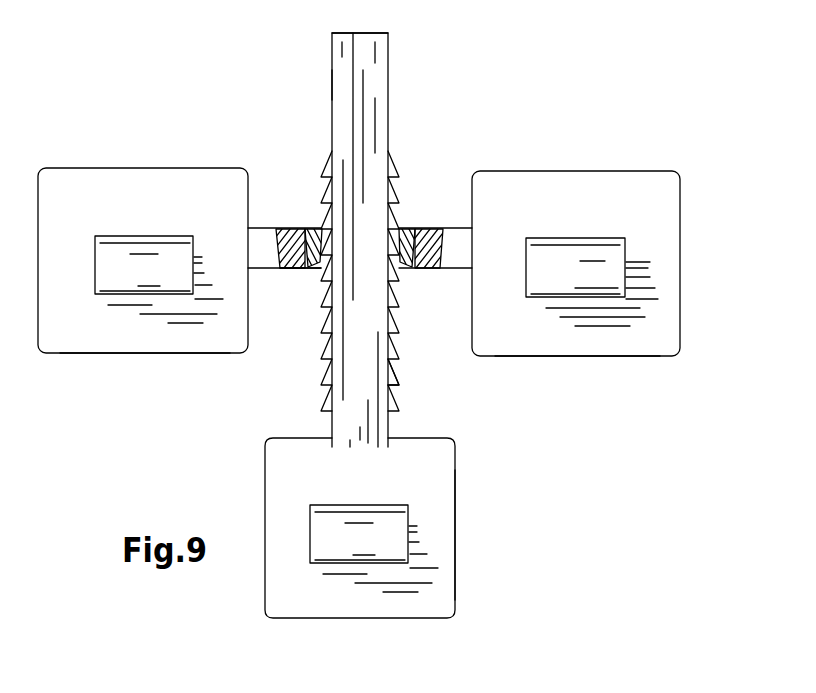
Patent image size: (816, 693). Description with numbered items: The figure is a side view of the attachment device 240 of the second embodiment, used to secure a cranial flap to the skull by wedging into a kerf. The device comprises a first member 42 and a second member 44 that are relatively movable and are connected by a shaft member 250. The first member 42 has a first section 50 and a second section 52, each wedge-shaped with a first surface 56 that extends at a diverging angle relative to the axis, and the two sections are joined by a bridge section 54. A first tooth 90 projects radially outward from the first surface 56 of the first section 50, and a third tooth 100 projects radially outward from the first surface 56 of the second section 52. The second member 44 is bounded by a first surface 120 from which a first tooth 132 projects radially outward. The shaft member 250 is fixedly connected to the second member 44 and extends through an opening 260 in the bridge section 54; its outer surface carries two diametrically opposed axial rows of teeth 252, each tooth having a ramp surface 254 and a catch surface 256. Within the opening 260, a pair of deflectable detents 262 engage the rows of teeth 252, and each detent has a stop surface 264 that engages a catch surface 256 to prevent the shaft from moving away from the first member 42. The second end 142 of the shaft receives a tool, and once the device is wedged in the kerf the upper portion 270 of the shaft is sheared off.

The first member 42 is at (614, 161).
The second member 44 is at (468, 541).
The first section 50 is at (642, 368).
The second section 52 is at (139, 363).
The bridge section 54 is at (452, 250).
The first surface 56 is at (125, 188).
The first tooth 90 is at (603, 272).
The third tooth 100 is at (170, 268).
The first surface 120 is at (433, 492).
The first tooth 132 is at (395, 545).
The second end 142 is at (375, 50).
The attachment device 240 is at (529, 88).
The shaft member 250 is at (402, 104).
The teeth 252 is at (308, 405).
The ramp surface 254 is at (395, 357).
The catch surface 256 is at (393, 367).
The opening 260 is at (322, 263).
The deflectable detents 262 is at (323, 228).
The stop surface 264 is at (320, 228).
The upper portion 270 is at (335, 82).